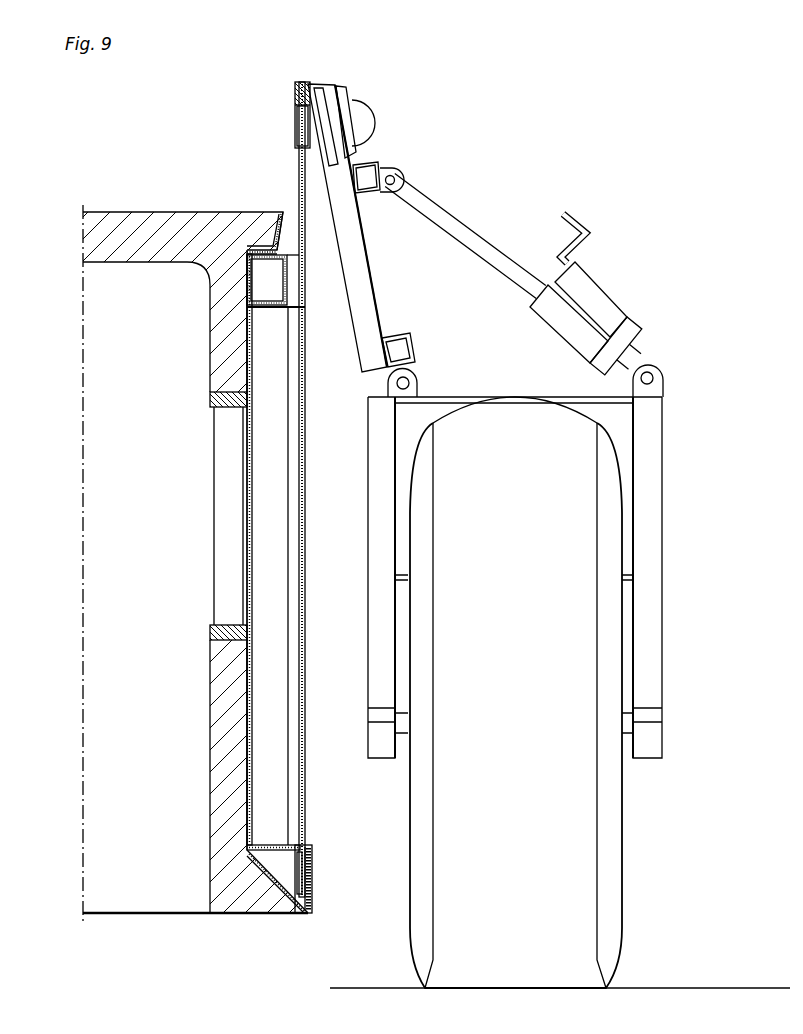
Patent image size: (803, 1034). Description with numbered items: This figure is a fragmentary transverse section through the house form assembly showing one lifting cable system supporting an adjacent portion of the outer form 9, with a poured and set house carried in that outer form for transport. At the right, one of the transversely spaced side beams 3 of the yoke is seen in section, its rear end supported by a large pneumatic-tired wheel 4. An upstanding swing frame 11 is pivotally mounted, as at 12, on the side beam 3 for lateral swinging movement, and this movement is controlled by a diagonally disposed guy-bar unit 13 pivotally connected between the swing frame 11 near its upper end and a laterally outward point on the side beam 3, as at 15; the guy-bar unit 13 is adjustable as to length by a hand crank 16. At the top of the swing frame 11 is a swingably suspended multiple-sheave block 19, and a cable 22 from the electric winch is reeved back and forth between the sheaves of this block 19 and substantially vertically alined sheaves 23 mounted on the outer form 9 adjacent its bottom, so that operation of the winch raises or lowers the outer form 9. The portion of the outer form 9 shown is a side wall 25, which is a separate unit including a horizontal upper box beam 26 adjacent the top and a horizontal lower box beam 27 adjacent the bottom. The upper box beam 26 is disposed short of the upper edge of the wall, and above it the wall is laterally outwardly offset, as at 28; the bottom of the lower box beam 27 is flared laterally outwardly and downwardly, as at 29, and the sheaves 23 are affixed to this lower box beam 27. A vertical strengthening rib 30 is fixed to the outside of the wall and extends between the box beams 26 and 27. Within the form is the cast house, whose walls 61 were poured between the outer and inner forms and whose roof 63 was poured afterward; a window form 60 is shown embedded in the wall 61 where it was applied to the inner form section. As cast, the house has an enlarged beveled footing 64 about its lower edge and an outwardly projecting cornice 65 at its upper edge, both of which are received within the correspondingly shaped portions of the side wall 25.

The side beams 3 is at (478, 396).
The pneumatic-tired wheels 4 is at (421, 892).
The outer form 9 is at (256, 455).
The swing frame 11 is at (362, 270).
The pivot 12 is at (414, 377).
The guy-bar unit 13 is at (476, 227).
The pivot point 15 is at (655, 368).
The hand crank 16 is at (572, 218).
The multiple-sheave block 19 is at (298, 117).
The cable 22 is at (307, 580).
The sheaves 23 is at (312, 866).
The side wall 25 is at (253, 506).
The upper box beam 26 is at (271, 308).
The lower box beam 27 is at (260, 847).
The laterally outwardly offset portion 28 is at (280, 237).
The flared bottom 29 is at (264, 899).
The vertical strengthening rib 30 is at (277, 705).
The window form 60 is at (223, 626).
The walls of the house 61 is at (228, 323).
The roof 63 is at (109, 213).
The beveled footing 64 is at (235, 896).
The cornice 65 is at (260, 236).